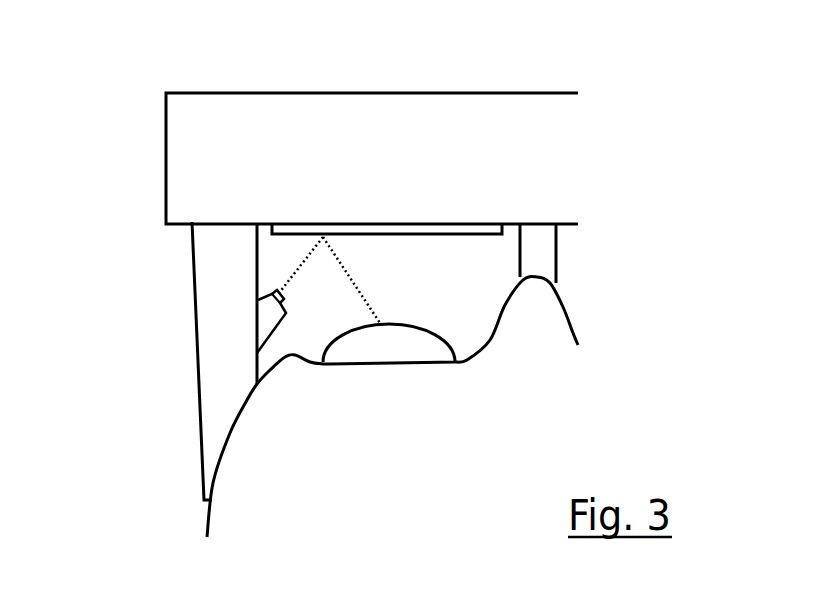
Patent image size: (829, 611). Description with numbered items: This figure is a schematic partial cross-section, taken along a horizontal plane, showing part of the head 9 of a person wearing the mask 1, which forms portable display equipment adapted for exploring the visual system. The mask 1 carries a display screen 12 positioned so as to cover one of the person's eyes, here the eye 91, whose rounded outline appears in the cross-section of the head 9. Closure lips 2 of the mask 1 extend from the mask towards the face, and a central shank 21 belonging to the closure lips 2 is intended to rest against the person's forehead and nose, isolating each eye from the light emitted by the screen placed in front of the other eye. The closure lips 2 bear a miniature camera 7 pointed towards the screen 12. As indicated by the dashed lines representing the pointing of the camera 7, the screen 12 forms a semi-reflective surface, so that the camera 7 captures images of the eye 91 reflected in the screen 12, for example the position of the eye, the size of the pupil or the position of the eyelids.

The mask 1 is at (192, 160).
The left-hand display screen 12 is at (373, 227).
The closure lips 2 is at (215, 375).
The central shank 21 is at (545, 250).
The miniature camera 7 is at (260, 313).
The head 9 is at (458, 443).
The eye 91 is at (385, 347).